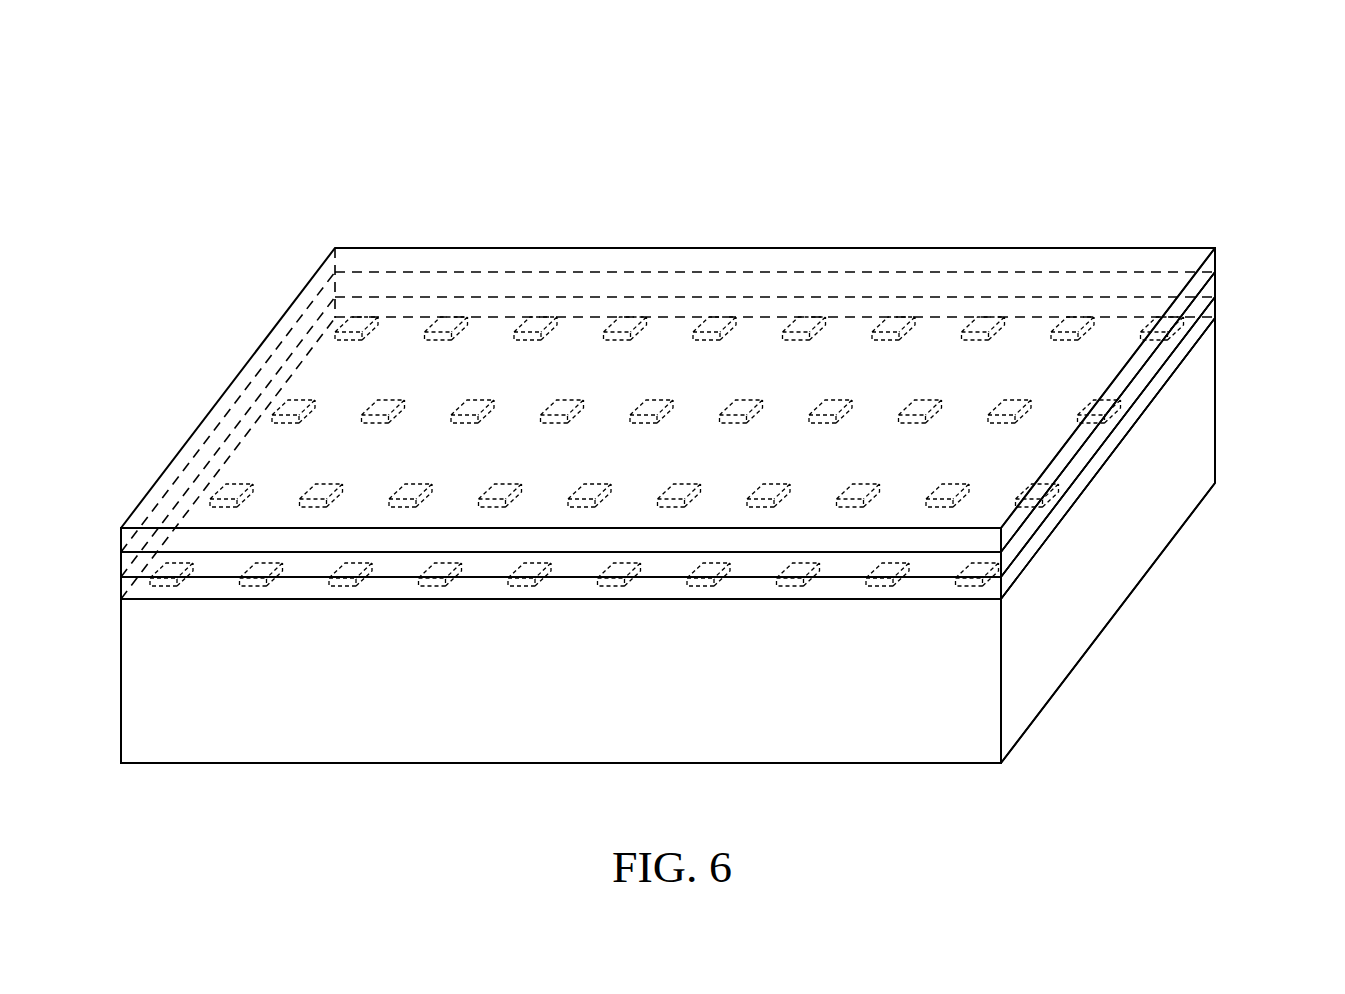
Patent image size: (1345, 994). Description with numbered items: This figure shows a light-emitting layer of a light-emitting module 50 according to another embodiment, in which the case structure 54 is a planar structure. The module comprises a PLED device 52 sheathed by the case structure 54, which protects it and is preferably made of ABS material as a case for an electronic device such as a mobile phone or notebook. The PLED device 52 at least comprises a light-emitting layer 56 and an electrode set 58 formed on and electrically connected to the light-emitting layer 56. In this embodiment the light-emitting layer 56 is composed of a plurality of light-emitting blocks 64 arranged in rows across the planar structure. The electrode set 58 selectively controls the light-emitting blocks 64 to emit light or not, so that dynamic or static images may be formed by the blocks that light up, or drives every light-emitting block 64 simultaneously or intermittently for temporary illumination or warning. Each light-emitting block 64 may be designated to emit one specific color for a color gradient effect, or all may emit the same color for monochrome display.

The light-emitting module 50 is at (1040, 108).
The PLED device 52 is at (1280, 253).
The case structure 54 is at (1215, 253).
The light-emitting layer 56 is at (1215, 306).
The electrode set 58 is at (1215, 283).
The light-emitting block 64 is at (150, 580).